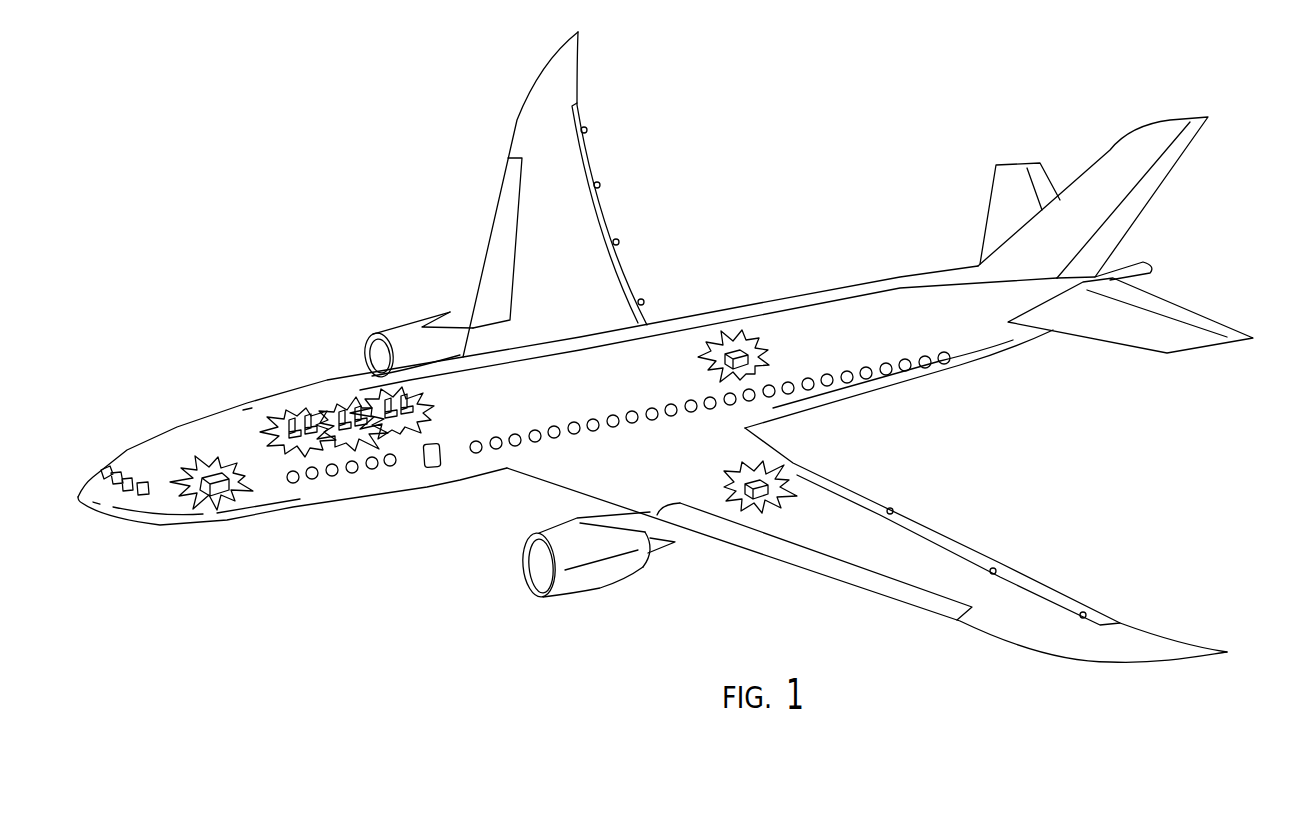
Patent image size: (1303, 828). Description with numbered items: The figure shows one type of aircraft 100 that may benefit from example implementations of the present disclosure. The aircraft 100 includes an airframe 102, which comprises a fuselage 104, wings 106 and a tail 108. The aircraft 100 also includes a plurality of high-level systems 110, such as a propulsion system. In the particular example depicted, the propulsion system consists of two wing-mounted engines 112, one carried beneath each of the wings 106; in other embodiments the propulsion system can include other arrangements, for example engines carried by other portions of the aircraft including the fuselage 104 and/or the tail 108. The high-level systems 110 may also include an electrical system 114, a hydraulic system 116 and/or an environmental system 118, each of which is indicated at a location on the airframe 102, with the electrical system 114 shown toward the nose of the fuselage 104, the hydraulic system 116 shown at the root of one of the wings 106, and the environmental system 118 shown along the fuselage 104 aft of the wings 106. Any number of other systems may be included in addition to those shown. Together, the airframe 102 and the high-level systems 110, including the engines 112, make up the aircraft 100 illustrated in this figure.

The aircraft 100 is at (318, 232).
The airframe 102 is at (325, 362).
The fuselage 104 is at (360, 499).
The wings 106 is at (515, 132).
The tail 108 is at (913, 209).
The high-level systems 110 is at (1108, 494).
The wing-mounted engines 112 is at (413, 325).
The electrical system 114 is at (213, 472).
The hydraulic system 116 is at (763, 471).
The environmental system 118 is at (730, 343).